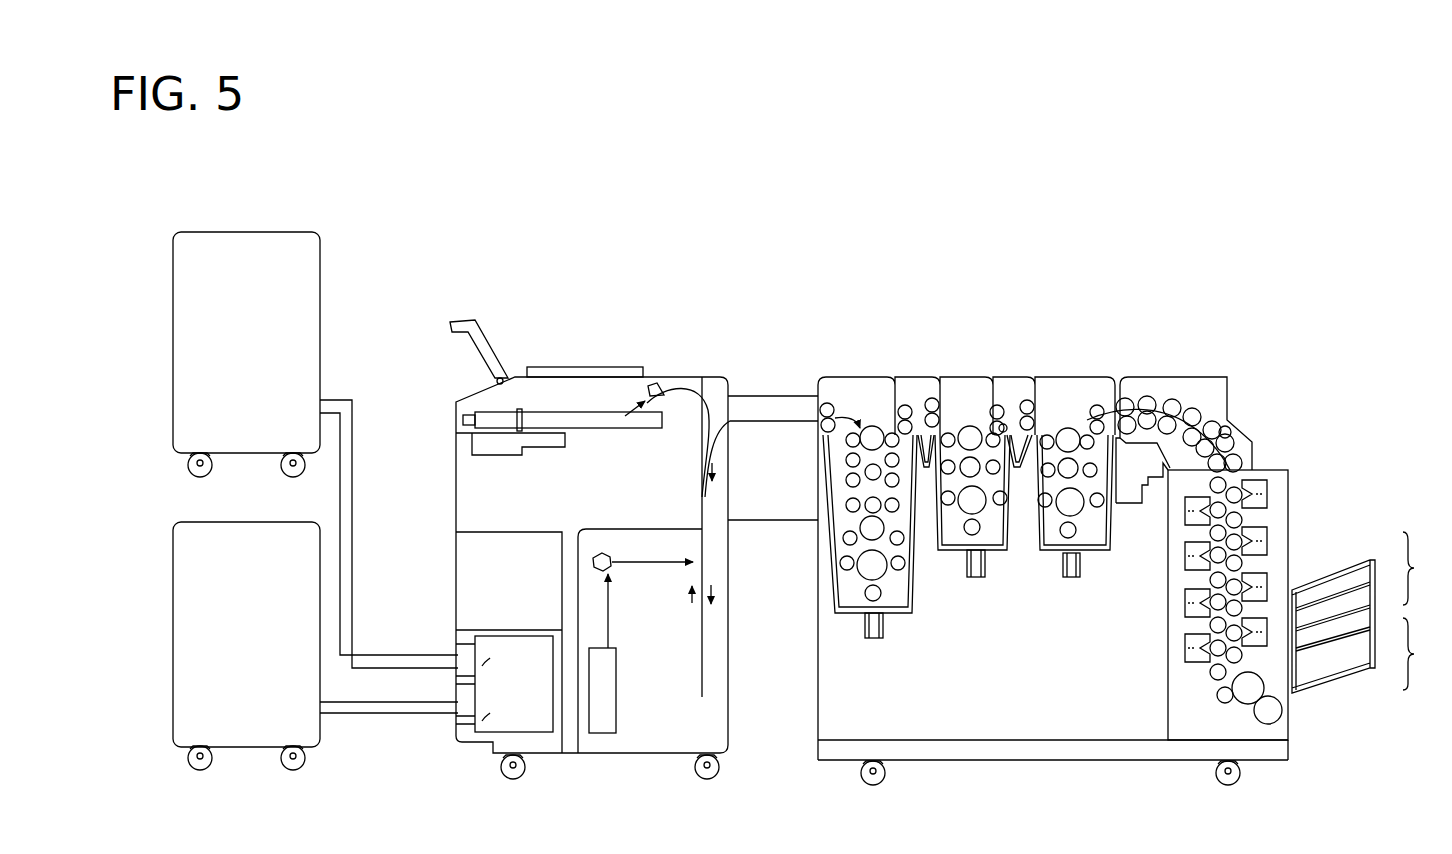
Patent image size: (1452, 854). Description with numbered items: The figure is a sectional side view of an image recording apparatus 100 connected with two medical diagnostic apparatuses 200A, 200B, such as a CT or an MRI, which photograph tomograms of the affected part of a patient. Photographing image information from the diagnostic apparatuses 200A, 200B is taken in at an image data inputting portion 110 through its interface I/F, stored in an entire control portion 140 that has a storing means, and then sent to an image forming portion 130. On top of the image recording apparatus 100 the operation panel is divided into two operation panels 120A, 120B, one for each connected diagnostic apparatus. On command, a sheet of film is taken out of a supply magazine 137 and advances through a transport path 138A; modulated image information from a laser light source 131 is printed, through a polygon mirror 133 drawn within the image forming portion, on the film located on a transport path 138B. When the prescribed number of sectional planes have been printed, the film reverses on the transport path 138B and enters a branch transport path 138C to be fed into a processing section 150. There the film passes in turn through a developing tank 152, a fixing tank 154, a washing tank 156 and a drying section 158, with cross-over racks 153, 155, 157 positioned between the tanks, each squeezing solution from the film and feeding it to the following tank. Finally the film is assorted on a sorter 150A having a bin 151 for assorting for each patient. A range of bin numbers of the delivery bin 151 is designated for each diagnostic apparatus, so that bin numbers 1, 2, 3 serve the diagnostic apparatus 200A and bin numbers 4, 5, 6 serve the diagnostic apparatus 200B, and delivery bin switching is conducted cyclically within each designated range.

The image recording apparatus 100 is at (693, 328).
The image data inputting portion 110 is at (545, 733).
The operation panel 120A is at (573, 339).
The operation panel 120B is at (562, 366).
The image forming portion 130 is at (658, 730).
The laser light source 131 is at (600, 717).
The photosensitive drum 133 is at (650, 562).
The supply magazine 137 is at (490, 428).
The transport path 138A is at (687, 392).
The transport path 138B is at (695, 641).
The branch transport path 138C is at (768, 421).
The entire control portion 140 is at (497, 575).
The processing section 150 is at (1037, 300).
The sorter 150A is at (1335, 700).
The bin 151 is at (1364, 613).
The developing tank 152 is at (837, 383).
The cross-over rack 153 is at (903, 384).
The fixing tank 154 is at (955, 384).
The cross-over rack 155 is at (1015, 384).
The washing tank 156 is at (1075, 384).
The cross-over rack 157 is at (1209, 384).
The drying section 158 is at (1269, 470).
The medical diagnostic apparatus 200A is at (255, 248).
The medical diagnostic apparatus 200B is at (237, 546).
The bin number 1 is at (1347, 573).
The bin number 2 is at (1347, 596).
The bin number 3 is at (1347, 618).
The bin number 4 is at (1392, 632).
The bin number 5 is at (1392, 657).
The bin number 6 is at (1392, 682).